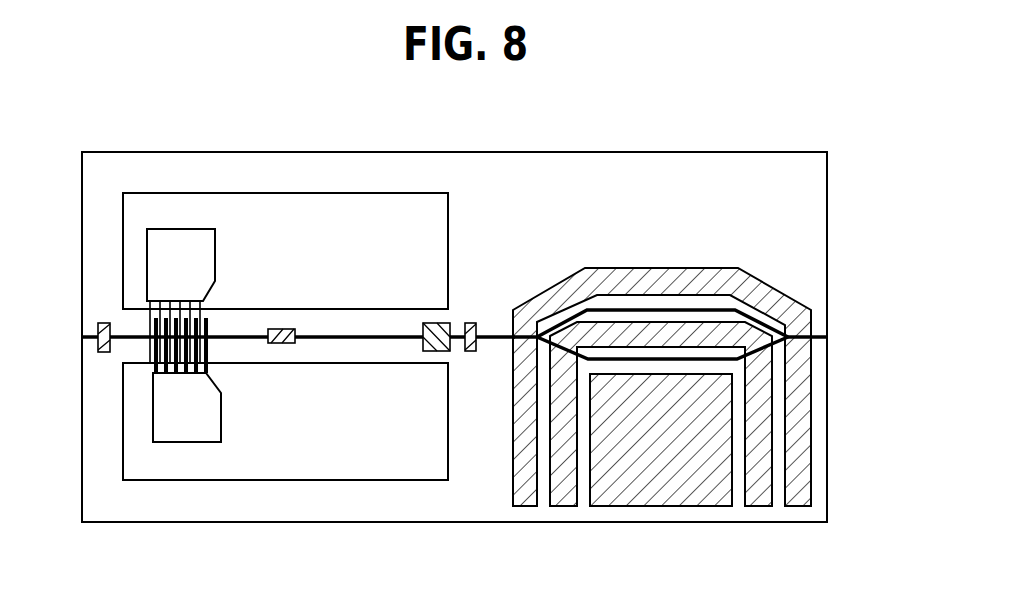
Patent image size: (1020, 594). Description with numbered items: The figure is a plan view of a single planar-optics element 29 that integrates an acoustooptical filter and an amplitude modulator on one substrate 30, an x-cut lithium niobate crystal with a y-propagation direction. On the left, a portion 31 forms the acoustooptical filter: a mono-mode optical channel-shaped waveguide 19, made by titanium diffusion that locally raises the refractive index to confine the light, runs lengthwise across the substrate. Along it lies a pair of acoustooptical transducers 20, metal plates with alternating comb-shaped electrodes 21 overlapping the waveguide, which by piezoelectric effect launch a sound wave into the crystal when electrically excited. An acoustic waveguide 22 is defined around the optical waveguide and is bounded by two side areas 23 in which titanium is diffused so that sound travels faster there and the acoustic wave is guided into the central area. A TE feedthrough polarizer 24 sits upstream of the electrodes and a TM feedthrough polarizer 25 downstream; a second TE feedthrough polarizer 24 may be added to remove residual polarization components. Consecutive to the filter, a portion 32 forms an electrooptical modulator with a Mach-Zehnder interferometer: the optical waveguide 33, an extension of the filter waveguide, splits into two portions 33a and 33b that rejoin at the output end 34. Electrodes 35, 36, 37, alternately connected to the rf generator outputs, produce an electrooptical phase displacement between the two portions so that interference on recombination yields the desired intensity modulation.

The optical channel-shaped waveguide 19 is at (376, 337).
The acoustooptical transducers 20 is at (153, 335).
The electrodes 21 is at (140, 350).
The acoustic waveguide 22 is at (343, 325).
The side areas 23 is at (448, 225).
The TE feedthrough polarizer 24 is at (102, 323).
The TM feedthrough polarizer 25 is at (283, 329).
The single planar-optics element 29 is at (836, 138).
The substrate 30 is at (817, 217).
The acoustooptical filter portion 31 is at (367, 171).
The electrooptical modulator portion 32 is at (648, 218).
The optical waveguide 33 is at (498, 334).
The first waveguide portion 33a is at (641, 310).
The second waveguide portion 33b is at (641, 360).
The output end 34 is at (823, 340).
The electrode 35 is at (522, 500).
The electrode 36 is at (758, 505).
The electrode 37 is at (638, 507).